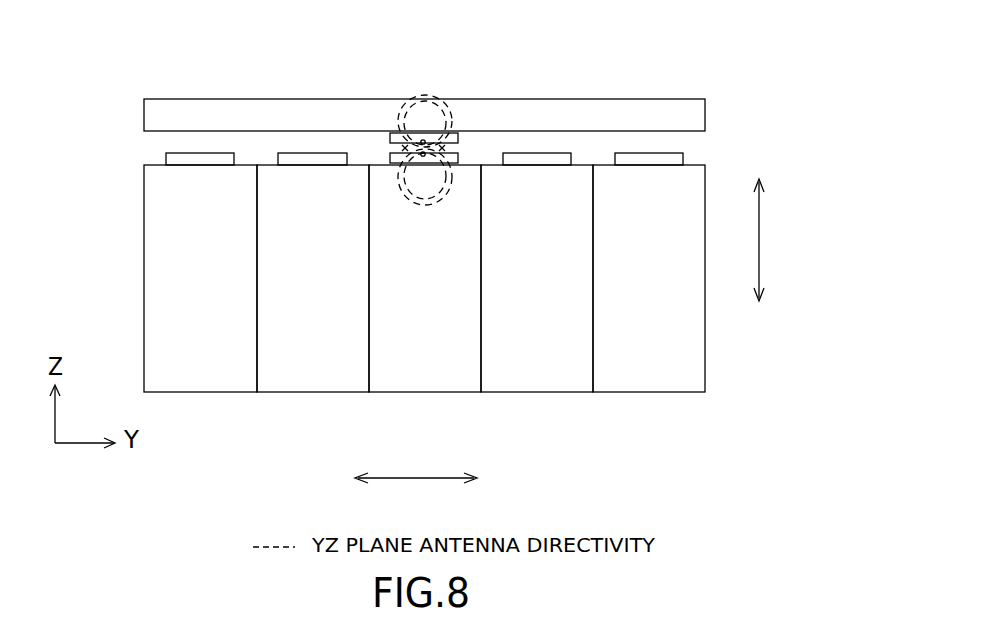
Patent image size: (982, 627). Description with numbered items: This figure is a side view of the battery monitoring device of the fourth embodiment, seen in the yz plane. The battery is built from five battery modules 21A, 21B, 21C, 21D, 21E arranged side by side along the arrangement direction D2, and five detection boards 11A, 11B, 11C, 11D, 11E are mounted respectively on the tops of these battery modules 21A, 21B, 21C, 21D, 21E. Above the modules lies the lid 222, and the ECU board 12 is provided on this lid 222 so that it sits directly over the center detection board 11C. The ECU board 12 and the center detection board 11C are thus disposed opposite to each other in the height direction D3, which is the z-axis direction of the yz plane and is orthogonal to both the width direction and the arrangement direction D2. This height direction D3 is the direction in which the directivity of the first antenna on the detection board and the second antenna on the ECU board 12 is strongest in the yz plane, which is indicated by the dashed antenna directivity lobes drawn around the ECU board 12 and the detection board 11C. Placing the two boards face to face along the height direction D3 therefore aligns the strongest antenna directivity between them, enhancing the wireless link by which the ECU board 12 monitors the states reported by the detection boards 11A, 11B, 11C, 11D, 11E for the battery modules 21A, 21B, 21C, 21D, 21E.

The lid 222 is at (665, 99).
The ECU board 12 is at (431, 155).
The detection board 11A is at (652, 165).
The detection board 11B is at (536, 165).
The detection board 11C is at (424, 165).
The detection board 11D is at (313, 165).
The detection board 11E is at (202, 165).
The battery module 21A is at (649, 375).
The battery module 21B is at (537, 375).
The battery module 21C is at (425, 375).
The battery module 21D is at (312, 375).
The battery module 21E is at (200, 375).
The arrangement direction D2 is at (414, 480).
The height direction D3 is at (760, 238).